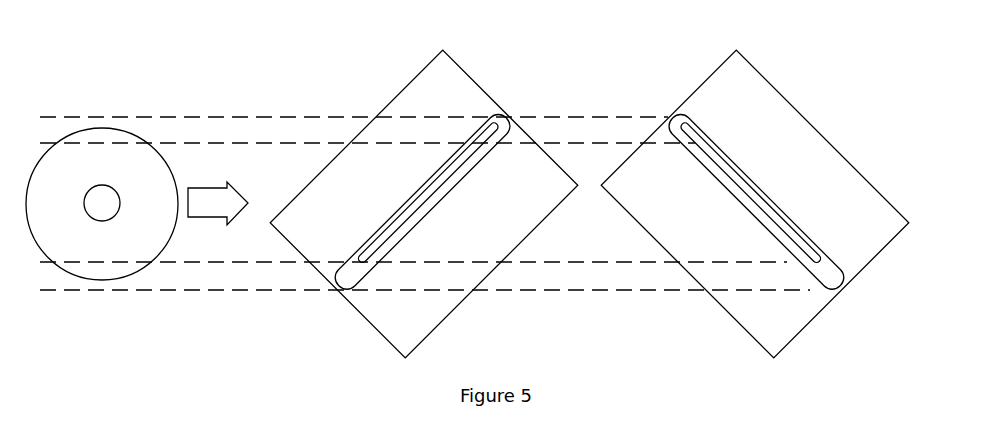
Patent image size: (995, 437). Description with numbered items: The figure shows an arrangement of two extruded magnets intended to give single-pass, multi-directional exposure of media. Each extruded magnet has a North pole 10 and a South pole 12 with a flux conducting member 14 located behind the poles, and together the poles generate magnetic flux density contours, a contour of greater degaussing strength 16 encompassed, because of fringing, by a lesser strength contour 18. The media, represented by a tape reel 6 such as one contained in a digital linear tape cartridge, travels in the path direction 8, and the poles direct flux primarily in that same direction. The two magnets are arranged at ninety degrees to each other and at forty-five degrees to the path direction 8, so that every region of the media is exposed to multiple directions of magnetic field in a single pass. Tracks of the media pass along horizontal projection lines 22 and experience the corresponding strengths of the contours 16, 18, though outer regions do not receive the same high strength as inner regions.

The tape reel 6 is at (110, 128).
The path direction 8 is at (233, 218).
The horizontal projection lines 22 is at (213, 115).
The North pole 10 is at (416, 97).
The South pole 12 is at (647, 170).
The flux conducting member 14 is at (532, 153).
The flux density contour of greater degaussing strength 16 is at (417, 223).
The lesser strength contour 18 is at (358, 290).